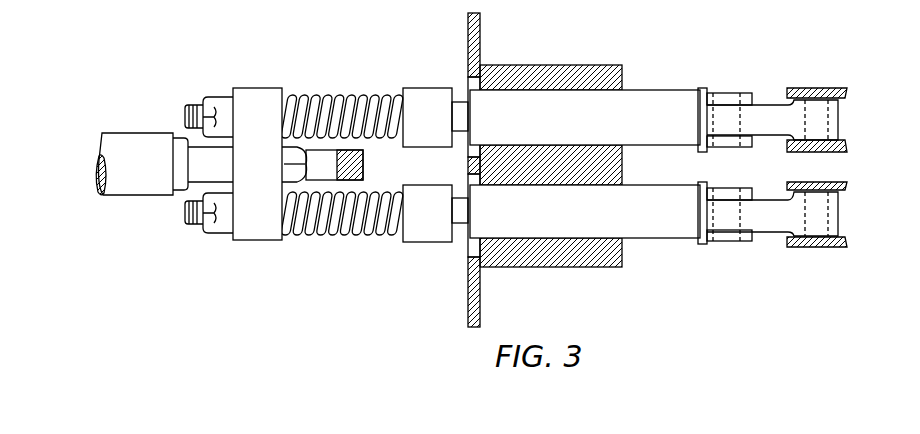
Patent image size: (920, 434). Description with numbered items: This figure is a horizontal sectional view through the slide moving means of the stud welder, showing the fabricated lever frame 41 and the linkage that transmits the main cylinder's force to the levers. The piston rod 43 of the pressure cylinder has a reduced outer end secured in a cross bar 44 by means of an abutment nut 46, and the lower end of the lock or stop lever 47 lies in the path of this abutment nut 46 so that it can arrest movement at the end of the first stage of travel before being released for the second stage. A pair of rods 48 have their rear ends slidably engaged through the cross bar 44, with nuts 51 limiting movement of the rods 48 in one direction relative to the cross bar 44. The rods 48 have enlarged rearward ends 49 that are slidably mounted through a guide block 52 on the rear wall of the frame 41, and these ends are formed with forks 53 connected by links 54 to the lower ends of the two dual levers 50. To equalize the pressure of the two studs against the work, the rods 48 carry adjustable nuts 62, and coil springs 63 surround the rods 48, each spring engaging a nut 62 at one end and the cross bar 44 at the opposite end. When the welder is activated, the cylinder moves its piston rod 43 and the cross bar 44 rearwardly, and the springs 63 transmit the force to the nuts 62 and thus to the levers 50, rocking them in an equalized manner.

The lever frame 41 is at (483, 29).
The piston rod 43 is at (125, 140).
The cross bar 44 is at (267, 229).
The abutment nut 46 is at (323, 162).
The stop lever 47 is at (364, 165).
The rods 48 is at (458, 102).
The enlarged rearward ends 49 is at (567, 117).
The dual levers 50 is at (847, 93).
The nuts 51 is at (215, 102).
The guide block 52 is at (553, 263).
The forks 53 is at (720, 100).
The links 54 is at (763, 113).
The adjustable nuts 62 is at (413, 95).
The coil springs 63 is at (315, 95).